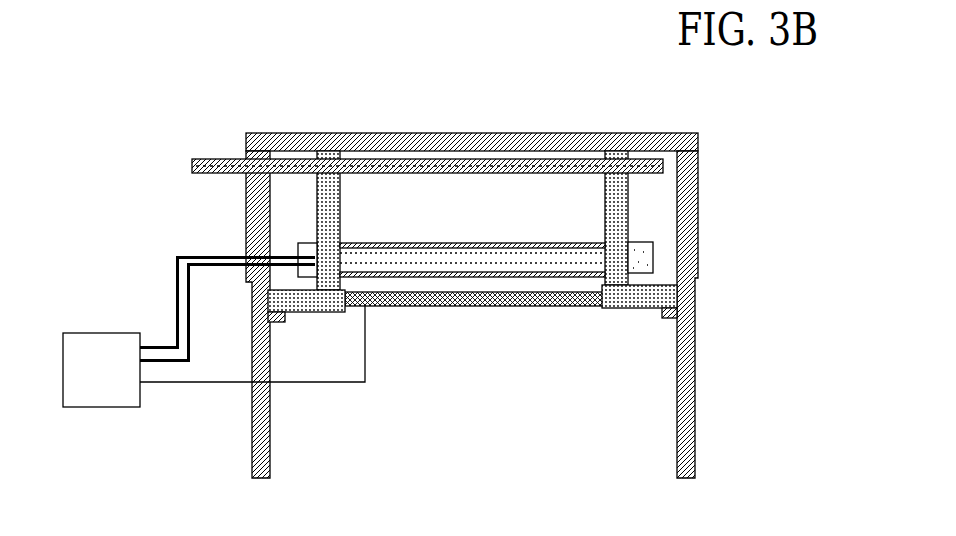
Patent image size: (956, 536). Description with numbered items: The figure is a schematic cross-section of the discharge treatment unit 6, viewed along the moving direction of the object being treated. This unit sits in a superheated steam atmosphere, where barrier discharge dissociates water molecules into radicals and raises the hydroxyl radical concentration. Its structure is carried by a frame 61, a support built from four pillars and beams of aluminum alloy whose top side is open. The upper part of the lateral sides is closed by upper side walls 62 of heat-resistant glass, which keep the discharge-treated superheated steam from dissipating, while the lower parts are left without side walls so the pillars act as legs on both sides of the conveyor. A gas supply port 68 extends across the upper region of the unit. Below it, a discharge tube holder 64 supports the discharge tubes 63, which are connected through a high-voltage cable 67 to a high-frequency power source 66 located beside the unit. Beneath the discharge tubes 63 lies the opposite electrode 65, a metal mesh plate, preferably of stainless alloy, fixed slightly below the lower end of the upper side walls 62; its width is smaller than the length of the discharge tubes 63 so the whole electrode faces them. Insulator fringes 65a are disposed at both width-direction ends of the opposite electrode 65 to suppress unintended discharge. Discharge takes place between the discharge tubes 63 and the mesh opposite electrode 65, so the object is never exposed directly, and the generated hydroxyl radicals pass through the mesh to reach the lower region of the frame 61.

The discharge treatment unit 6 is at (458, 66).
The frame 61 is at (486, 133).
The upper side walls 62 is at (256, 133).
The discharge tubes 63 is at (653, 258).
The discharge tube holder 64 is at (628, 203).
The opposite electrode 65 is at (455, 306).
The insulator fringes 65a is at (636, 308).
The high-frequency power source 66 is at (88, 333).
The high-voltage cable 67 is at (200, 256).
The gas supply port 68 is at (228, 159).